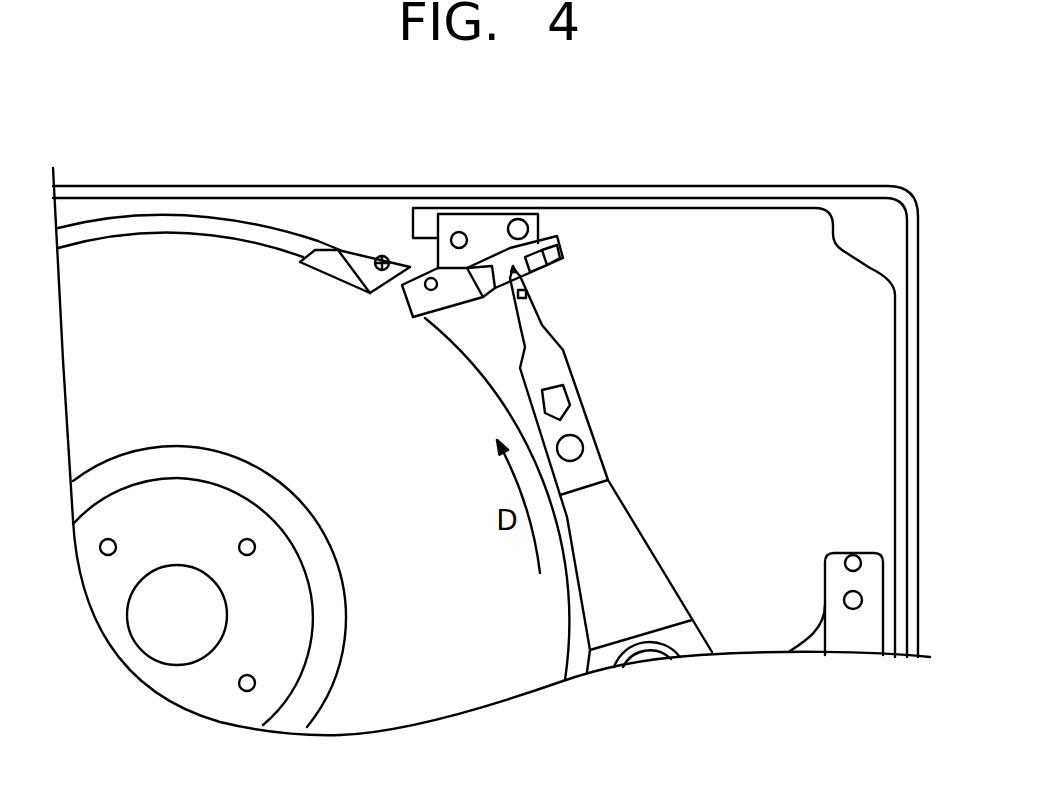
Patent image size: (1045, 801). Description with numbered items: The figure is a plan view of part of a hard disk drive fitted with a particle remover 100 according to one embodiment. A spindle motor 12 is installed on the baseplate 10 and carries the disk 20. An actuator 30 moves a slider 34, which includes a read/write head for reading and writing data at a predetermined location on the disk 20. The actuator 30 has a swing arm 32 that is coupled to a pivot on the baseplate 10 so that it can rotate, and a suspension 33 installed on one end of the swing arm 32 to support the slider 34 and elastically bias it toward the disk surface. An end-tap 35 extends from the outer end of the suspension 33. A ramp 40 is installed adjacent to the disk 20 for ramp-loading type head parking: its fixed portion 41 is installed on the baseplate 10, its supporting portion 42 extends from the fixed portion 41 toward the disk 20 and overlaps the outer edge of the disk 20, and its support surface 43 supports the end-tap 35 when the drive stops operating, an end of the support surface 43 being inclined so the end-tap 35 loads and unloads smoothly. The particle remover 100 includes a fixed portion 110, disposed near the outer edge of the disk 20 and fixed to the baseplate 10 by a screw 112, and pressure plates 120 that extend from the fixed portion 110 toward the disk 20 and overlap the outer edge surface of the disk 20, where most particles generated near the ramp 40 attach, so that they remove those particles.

The baseplate 10 is at (690, 198).
The spindle motor 12 is at (175, 687).
The disk 20 is at (450, 710).
The actuator 30 is at (641, 465).
The swing arm 32 is at (648, 558).
The suspension 33 is at (538, 340).
The slider 34 is at (533, 300).
The end-tap 35 is at (518, 270).
The ramp 40 is at (482, 251).
The fixed portion 41 is at (538, 240).
The supporting portion 42 is at (455, 308).
The support surface 43 is at (458, 290).
The particle remover 100 is at (336, 267).
The fixed portion 110 is at (358, 252).
The screw 112 is at (382, 256).
The pressure plates 120 is at (322, 264).